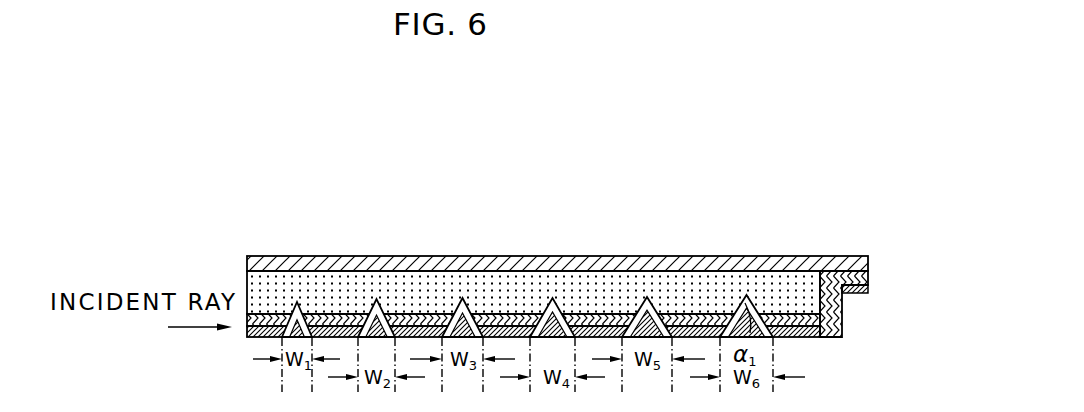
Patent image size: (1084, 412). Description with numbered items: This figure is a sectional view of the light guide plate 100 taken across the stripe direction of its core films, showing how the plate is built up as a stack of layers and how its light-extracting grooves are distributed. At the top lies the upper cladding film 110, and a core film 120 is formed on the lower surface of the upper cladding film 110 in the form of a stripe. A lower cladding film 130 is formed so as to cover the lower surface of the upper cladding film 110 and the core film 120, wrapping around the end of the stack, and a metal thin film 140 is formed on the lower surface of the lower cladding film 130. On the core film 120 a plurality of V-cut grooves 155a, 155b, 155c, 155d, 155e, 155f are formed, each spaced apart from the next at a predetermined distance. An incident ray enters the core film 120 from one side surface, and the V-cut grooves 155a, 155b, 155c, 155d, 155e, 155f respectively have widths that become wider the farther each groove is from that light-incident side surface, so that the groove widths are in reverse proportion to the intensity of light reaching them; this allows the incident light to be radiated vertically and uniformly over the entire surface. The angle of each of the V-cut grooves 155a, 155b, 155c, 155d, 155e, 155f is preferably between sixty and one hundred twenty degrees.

The light guide plate 100 is at (599, 282).
The upper cladding film 110 is at (868, 260).
The core film 120 is at (800, 307).
The lower cladding film 130 is at (868, 280).
The metal thin film 140 is at (858, 295).
The V-cut groove 155a is at (291, 313).
The V-cut groove 155b is at (368, 313).
The V-cut groove 155c is at (453, 313).
The V-cut groove 155d is at (543, 313).
The V-cut groove 155e is at (637, 313).
The V-cut groove 155f is at (736, 311).